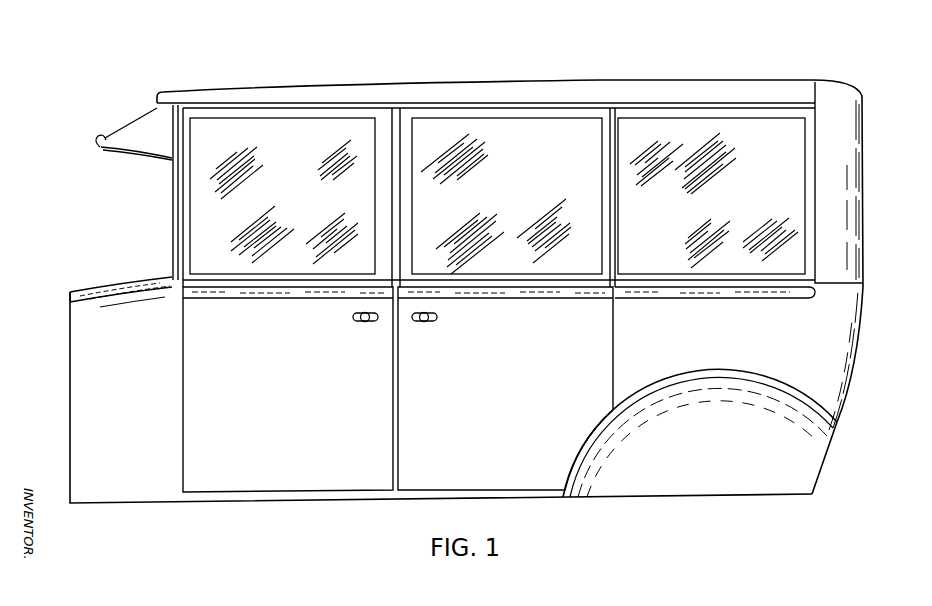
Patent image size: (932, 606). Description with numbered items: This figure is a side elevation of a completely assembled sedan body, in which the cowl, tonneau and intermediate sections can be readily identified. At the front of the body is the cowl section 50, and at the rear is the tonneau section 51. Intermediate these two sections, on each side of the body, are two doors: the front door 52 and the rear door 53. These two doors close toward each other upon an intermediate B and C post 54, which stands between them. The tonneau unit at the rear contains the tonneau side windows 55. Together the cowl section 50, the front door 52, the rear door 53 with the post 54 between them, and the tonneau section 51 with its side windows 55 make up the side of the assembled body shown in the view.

The cowl section 50 is at (441, 377).
The tonneau section 51 is at (847, 228).
The front door 52 is at (288, 389).
The rear door 53 is at (505, 388).
The intermediate B and C post 54 is at (397, 118).
The tonneau side windows 55 is at (762, 137).